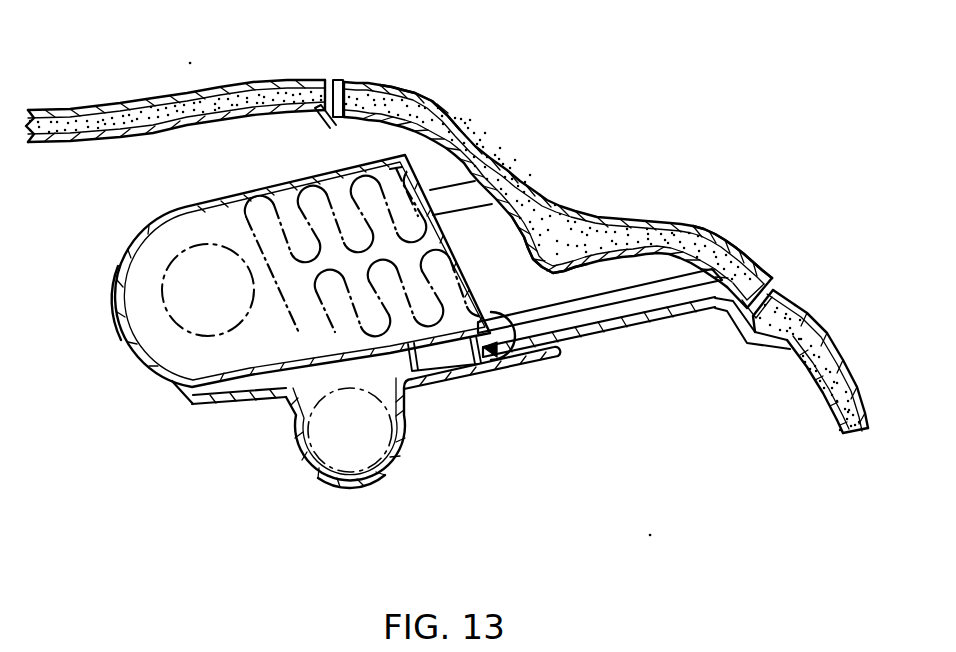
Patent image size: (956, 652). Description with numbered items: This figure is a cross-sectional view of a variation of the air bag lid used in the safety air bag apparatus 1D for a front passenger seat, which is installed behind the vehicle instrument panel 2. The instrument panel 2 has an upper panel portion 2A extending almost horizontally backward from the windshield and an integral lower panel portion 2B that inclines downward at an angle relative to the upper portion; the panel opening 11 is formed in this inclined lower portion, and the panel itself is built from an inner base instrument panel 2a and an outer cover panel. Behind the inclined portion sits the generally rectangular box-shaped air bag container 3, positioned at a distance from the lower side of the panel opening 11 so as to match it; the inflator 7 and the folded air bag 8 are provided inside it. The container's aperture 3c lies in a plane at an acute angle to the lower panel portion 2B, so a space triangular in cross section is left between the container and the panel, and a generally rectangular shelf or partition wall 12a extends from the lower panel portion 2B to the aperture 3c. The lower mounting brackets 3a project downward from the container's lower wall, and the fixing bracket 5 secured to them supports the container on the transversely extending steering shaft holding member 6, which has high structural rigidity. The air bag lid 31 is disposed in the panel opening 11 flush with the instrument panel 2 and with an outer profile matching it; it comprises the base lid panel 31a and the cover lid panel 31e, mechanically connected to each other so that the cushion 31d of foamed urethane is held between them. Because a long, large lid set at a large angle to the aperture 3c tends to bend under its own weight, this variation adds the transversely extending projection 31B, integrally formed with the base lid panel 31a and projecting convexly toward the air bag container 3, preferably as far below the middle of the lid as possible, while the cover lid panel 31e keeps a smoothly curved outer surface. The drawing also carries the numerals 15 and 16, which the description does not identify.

The upper panel portion 2A is at (262, 80).
The panel opening 11 is at (342, 82).
The air bag lid 31 is at (605, 201).
The base lid panel 31a is at (415, 110).
The cushion 31d is at (542, 212).
The cover lid panel 31e is at (703, 224).
The projection 31B is at (500, 262).
The instrument panel 2 is at (855, 368).
The lower panel portion 2B is at (824, 328).
The base instrument panel 2a is at (800, 355).
The support plate 16 is at (606, 297).
The partition wall 12a is at (587, 337).
The connecting tab 15 is at (458, 202).
The air bag container 3 is at (134, 250).
The safety air bag apparatus 1D is at (131, 360).
The inflator 7 is at (160, 293).
The folded air bag 8 is at (283, 300).
The lower mounting brackets 3a is at (190, 405).
The fixing bracket 5 is at (300, 443).
The steering shaft holding member 6 is at (377, 472).
The aperture 3c is at (480, 379).